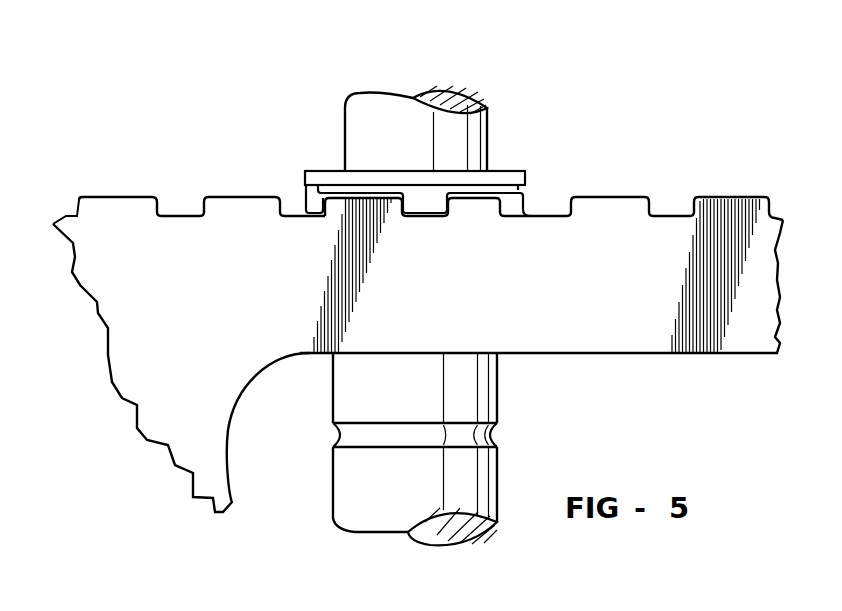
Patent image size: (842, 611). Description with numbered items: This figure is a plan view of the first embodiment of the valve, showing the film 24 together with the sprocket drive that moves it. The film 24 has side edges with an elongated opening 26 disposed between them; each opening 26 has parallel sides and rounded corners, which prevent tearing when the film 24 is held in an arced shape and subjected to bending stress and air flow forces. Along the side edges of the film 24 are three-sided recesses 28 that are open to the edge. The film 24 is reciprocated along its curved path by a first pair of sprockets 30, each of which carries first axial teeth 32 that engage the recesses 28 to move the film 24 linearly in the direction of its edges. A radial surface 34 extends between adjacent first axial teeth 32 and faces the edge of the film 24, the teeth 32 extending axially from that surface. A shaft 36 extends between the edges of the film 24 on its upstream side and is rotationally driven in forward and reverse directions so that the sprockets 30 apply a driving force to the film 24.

The film 24 is at (158, 325).
The opening 26 is at (232, 436).
The recess 28 is at (553, 217).
The first pair of sprockets 30 is at (333, 175).
The first axial teeth 32 is at (426, 211).
The radial surface 34 is at (505, 192).
The shaft 36 is at (368, 116).